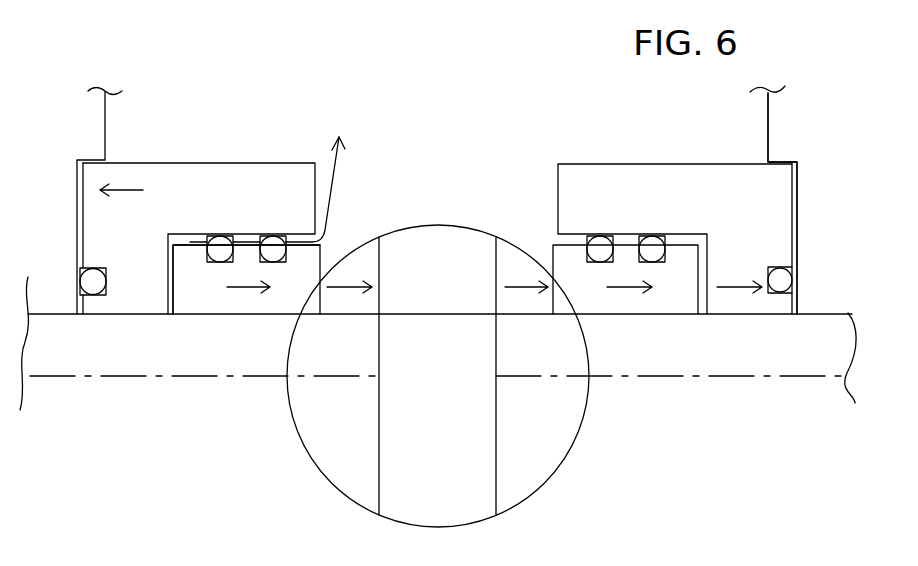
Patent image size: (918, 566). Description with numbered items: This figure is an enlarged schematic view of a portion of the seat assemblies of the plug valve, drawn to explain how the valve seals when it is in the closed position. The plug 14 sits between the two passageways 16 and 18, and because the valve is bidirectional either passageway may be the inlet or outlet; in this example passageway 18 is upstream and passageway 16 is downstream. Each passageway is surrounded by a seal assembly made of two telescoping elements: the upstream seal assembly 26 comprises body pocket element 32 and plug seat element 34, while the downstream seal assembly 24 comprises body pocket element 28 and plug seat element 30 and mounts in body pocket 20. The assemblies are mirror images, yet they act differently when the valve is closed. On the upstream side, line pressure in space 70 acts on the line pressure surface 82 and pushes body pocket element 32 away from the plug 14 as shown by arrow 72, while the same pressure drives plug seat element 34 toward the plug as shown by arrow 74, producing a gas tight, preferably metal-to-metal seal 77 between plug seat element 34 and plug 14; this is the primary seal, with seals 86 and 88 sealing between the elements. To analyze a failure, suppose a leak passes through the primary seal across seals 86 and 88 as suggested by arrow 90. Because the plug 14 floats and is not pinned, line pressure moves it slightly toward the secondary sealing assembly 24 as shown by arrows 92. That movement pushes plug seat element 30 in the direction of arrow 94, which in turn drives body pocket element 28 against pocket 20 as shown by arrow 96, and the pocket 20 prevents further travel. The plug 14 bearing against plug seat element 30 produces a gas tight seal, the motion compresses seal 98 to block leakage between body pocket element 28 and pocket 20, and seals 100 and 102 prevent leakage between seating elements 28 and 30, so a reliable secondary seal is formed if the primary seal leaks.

The plug 14 is at (320, 493).
The passageway 16 is at (758, 348).
The passageway 18 is at (63, 351).
The body pocket 20 is at (798, 173).
The seal assembly 24 is at (683, 250).
The seal assembly 26 is at (235, 250).
The body pocket element 28 is at (762, 218).
The plug seat element 30 is at (677, 298).
The body pocket element 32 is at (182, 202).
The plug seat element 34 is at (193, 303).
The space 70 is at (173, 317).
The arrow 72 is at (123, 190).
The arrow 74 is at (235, 287).
The metal-to-metal seal 77 is at (297, 427).
The line pressure surface 82 is at (182, 263).
The seal 86 is at (217, 247).
The seal 88 is at (270, 247).
The arrow 90 is at (338, 170).
The arrows 92 is at (437, 319).
The arrow 94 is at (615, 287).
The arrow 96 is at (725, 287).
The seal 98 is at (782, 282).
The seal 100 is at (597, 247).
The seal 102 is at (648, 247).